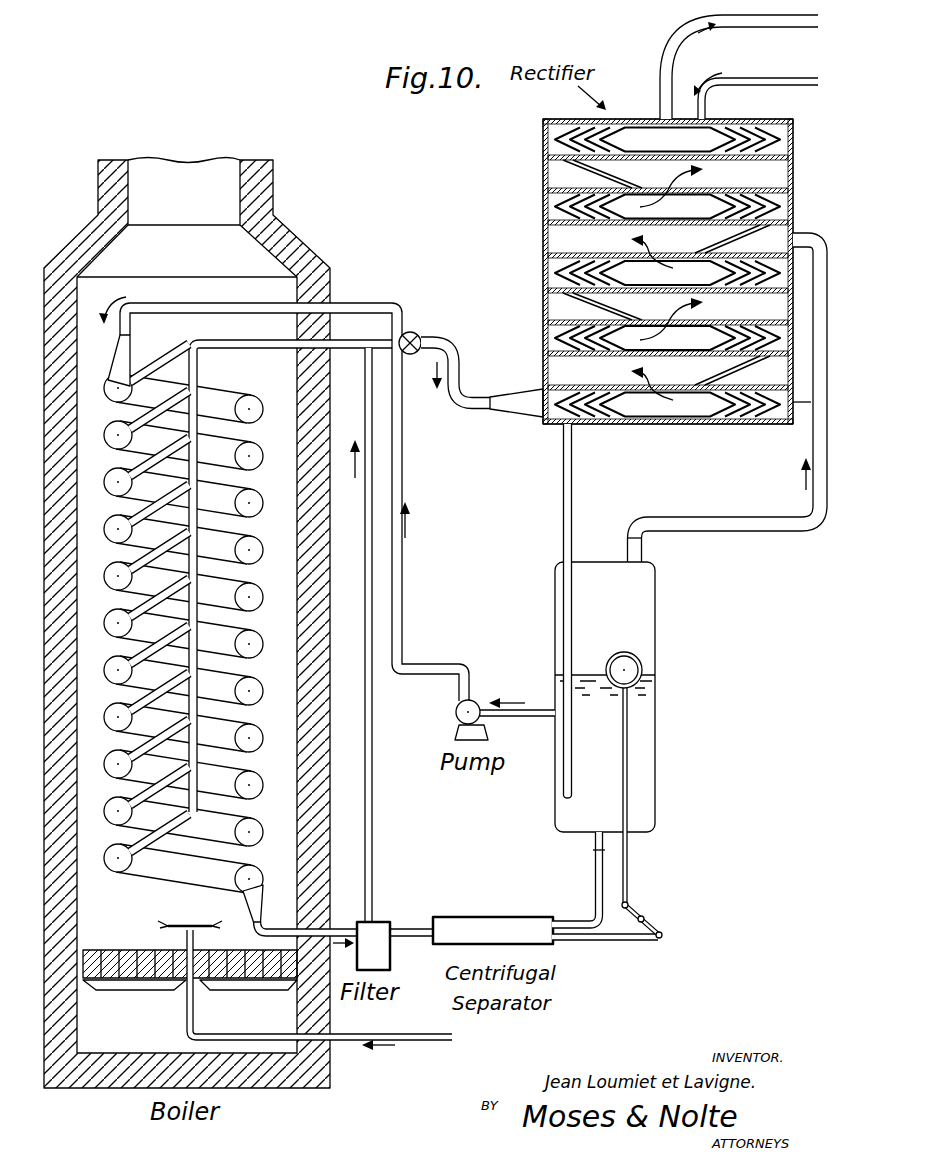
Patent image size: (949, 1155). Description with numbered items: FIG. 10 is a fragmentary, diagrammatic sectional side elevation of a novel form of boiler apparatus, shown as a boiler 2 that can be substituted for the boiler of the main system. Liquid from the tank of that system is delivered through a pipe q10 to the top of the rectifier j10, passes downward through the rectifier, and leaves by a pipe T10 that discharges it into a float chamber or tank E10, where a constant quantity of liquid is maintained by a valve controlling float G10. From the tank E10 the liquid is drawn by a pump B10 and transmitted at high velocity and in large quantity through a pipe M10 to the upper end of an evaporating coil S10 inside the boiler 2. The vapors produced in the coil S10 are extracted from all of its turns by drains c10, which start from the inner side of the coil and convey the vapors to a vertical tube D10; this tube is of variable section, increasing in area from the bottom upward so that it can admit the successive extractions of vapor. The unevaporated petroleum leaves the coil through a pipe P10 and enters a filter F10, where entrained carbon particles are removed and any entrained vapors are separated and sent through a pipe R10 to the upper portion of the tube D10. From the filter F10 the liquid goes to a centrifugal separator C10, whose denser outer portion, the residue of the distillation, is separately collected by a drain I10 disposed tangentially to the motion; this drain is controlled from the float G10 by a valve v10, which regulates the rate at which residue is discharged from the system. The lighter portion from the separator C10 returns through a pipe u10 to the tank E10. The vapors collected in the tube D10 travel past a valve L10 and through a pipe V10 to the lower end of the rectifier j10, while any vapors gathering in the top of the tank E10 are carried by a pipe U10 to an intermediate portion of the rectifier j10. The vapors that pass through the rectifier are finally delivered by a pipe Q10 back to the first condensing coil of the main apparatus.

The boiler 2 is at (326, 735).
The evaporating coil S10 is at (233, 393).
The drains c10 is at (160, 365).
The vertical tube D10 is at (344, 341).
The pipe M10 is at (403, 592).
The pipe R10 is at (373, 798).
The valve L10 is at (411, 331).
The pipe V10 is at (476, 397).
The rectifier j10 is at (542, 211).
The pipe Q10 is at (675, 46).
The pipe q10 is at (782, 81).
The pipe U10 is at (738, 522).
The float chamber or tank E10 is at (657, 621).
The pipe T10 is at (561, 470).
The valve controlling float G10 is at (617, 658).
The pump B10 is at (456, 708).
The pipe P10 is at (275, 929).
The filter F10 is at (379, 926).
The centrifugal separator C10 is at (492, 922).
The pipe u10 is at (594, 866).
The drain I10 is at (606, 941).
The valve v10 is at (664, 937).